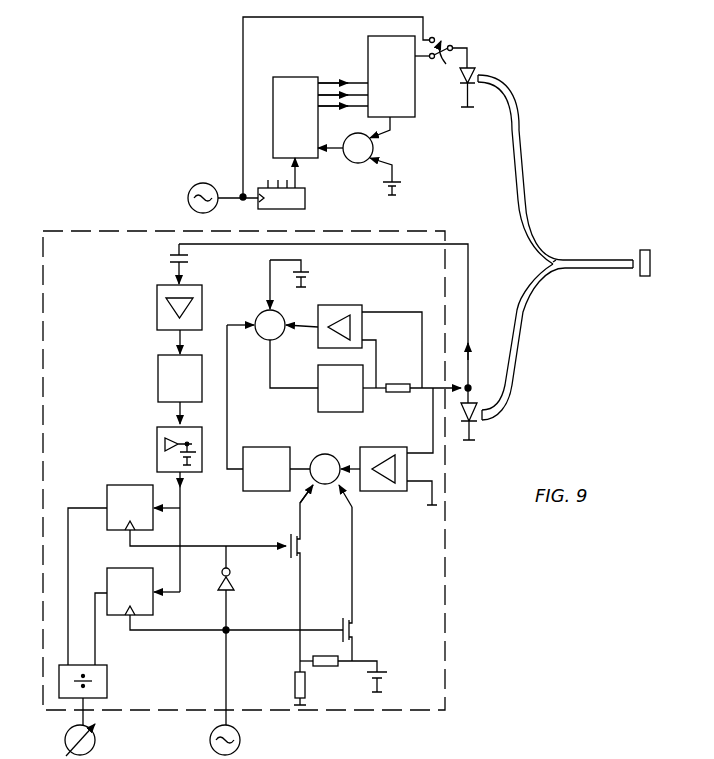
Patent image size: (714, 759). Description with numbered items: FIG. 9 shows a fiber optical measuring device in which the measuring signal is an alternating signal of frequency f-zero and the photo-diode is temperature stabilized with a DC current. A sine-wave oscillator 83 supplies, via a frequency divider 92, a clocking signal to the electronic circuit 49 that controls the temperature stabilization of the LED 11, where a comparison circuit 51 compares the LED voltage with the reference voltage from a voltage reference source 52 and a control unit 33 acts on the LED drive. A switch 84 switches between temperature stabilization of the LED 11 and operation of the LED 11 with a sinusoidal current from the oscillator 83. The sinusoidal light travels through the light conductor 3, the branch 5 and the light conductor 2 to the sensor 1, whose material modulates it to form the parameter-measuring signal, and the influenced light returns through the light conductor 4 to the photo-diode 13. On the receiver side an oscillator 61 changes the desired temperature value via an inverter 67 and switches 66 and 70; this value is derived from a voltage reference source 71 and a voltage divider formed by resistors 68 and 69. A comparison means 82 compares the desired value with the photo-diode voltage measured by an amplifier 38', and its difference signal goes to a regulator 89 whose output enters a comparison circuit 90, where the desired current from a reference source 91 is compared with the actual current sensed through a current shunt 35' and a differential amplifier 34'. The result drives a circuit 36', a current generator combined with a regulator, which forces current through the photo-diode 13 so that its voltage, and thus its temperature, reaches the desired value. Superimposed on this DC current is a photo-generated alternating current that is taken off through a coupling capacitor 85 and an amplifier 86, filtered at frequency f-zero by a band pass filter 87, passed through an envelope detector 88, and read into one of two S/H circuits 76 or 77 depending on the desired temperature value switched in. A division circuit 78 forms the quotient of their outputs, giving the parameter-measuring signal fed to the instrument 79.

The sensor 1 is at (645, 250).
The light conductor 2 is at (600, 258).
The light conductor 3 is at (524, 178).
The light conductor 4 is at (525, 332).
The light conductor branch 5 is at (545, 250).
The LED 11 is at (474, 70).
The photo-diode 13 is at (475, 400).
The control unit 33 is at (368, 44).
The differential amplifier 34' is at (370, 330).
The current shunt 35' is at (423, 370).
The current generator combined with a regulator 36' is at (352, 401).
The amplifier 38' is at (389, 446).
The electronic circuit 49 is at (290, 77).
The comparison circuit 51 is at (373, 150).
The voltage reference source 52 is at (396, 192).
The oscillator 61 is at (240, 745).
The switch 66 is at (297, 548).
The inverter 67 is at (234, 584).
The resistor 68 is at (295, 690).
The resistor 69 is at (325, 667).
The switch 70 is at (352, 630).
The voltage reference source 71 is at (385, 670).
The S/H circuit 76 is at (120, 568).
The S/H circuit 77 is at (118, 485).
The division circuit 78 is at (107, 672).
The instrument 79 is at (96, 742).
The comparison means 82 is at (312, 458).
The sine-wave oscillator 83 is at (187, 194).
The switch 84 is at (446, 46).
The coupling capacitor 85 is at (170, 259).
The amplifier 86 is at (157, 302).
The band pass filter 87 is at (158, 392).
The envelope detector 88 is at (157, 447).
The regulator 89 is at (270, 492).
The comparison circuit 90 is at (262, 340).
The reference source 91 is at (312, 270).
The frequency divider 92 is at (305, 200).